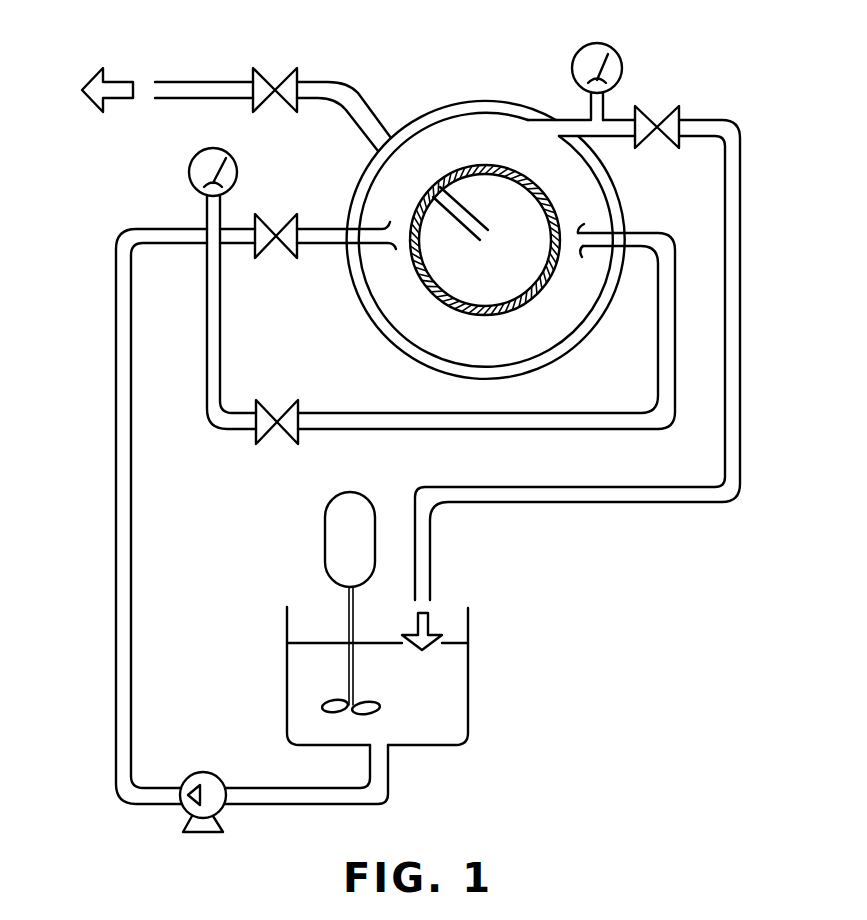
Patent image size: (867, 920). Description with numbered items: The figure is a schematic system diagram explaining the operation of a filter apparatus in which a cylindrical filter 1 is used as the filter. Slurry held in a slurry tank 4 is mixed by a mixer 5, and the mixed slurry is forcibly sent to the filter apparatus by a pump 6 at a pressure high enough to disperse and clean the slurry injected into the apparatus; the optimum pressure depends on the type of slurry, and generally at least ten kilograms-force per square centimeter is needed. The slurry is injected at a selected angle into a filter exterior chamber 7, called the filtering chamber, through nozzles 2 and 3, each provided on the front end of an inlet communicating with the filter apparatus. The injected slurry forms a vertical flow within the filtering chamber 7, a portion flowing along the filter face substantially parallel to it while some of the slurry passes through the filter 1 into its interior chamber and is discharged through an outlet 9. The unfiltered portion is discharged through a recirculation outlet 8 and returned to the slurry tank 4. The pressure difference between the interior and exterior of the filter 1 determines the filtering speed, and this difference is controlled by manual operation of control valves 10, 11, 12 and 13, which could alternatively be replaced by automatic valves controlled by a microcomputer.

The filter 1 is at (487, 163).
The nozzle 2 is at (378, 216).
The nozzle 3 is at (587, 253).
The slurry tank 4 is at (468, 675).
The mixer 5 is at (335, 547).
The pump 6 is at (210, 772).
The filter exterior chamber 7 is at (395, 298).
The recirculation outlet 8 is at (546, 124).
The outlet 9 is at (473, 217).
The control valve 10 is at (288, 72).
The control valve 11 is at (265, 223).
The control valve 12 is at (292, 440).
The control valve 13 is at (680, 112).